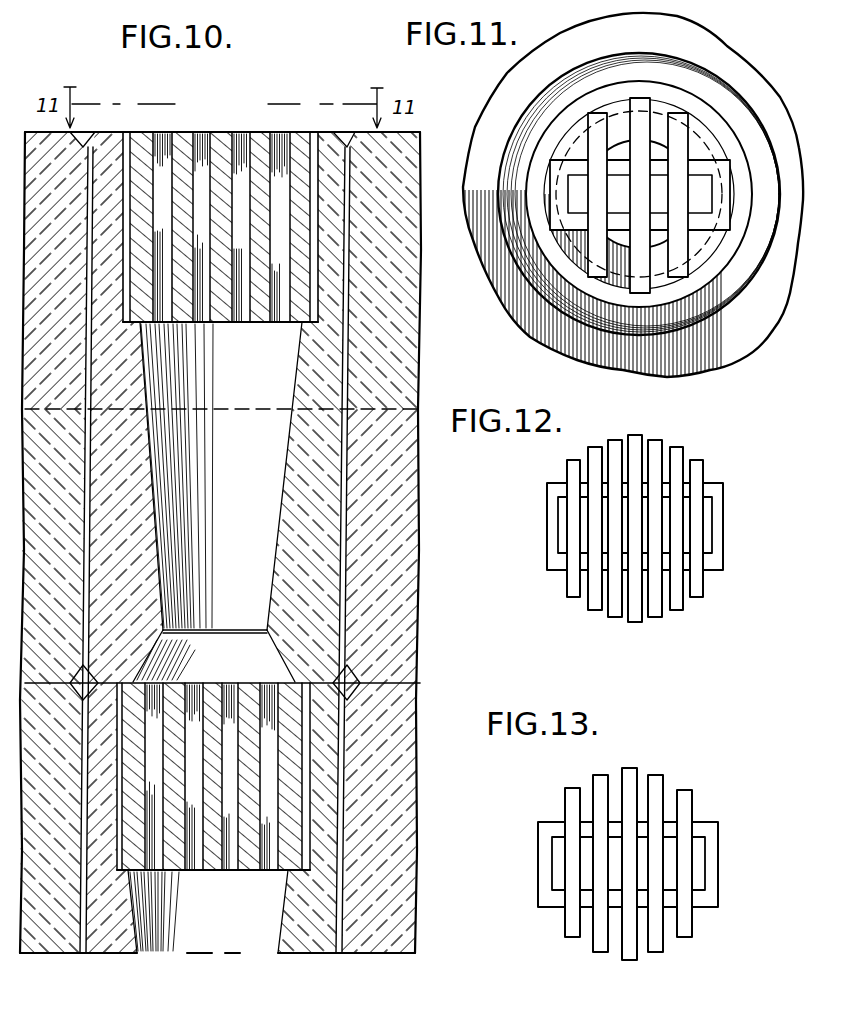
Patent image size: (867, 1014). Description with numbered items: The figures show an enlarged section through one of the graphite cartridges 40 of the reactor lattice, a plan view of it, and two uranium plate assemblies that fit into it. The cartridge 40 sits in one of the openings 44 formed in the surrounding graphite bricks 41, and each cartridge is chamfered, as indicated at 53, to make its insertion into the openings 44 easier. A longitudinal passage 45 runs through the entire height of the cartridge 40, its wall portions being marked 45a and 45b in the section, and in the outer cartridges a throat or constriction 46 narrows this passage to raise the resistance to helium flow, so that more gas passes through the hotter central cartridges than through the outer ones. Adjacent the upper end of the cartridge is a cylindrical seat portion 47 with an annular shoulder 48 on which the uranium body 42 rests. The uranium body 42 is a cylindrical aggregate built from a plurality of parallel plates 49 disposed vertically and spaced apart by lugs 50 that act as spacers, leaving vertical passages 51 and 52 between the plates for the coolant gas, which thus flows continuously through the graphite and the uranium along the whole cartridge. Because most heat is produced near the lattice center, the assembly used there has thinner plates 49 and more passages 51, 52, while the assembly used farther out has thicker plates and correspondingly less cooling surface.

In FIG. 10, the graphite cartridge 40 is at (330, 142).
In FIG. 11, the graphite cartridge 40 is at (575, 112).
In FIG. 10, the graphite bricks 41 is at (395, 363).
In FIG. 11, the graphite bricks 41 is at (710, 363).
In FIG. 10, the uranium body 42 is at (261, 137).
In FIG. 11, the uranium body 42 is at (672, 112).
In FIG. 12, the uranium body 42 is at (601, 621).
In FIG. 13, the uranium body 42 is at (581, 951).
In FIG. 10, the openings in the bricks 44 is at (350, 515).
In FIG. 11, the openings in the bricks 44 is at (747, 117).
In FIG. 10, the longitudinal passage 45 is at (300, 637).
In FIG. 10, the conical cavity bottom surface 45a is at (262, 650).
In FIG. 10, the cavity side wall surface 45b is at (265, 492).
In FIG. 10, the throat or constriction 46 is at (293, 613).
In FIG. 10, the cylindrical seat portion 47 is at (315, 285).
In FIG. 10, the annular shoulder 48 is at (313, 310).
In FIG. 11, the annular shoulder 48 is at (708, 253).
In FIG. 10, the parallel plates 49 is at (230, 126).
In FIG. 11, the parallel plates 49 is at (693, 117).
In FIG. 12, the parallel plates 49 is at (663, 440).
In FIG. 13, the parallel plates 49 is at (660, 788).
In FIG. 11, the lugs 50 is at (697, 227).
In FIG. 13, the lugs 50 is at (692, 830).
In FIG. 11, the vertical passages 51 is at (573, 192).
In FIG. 12, the vertical passages 51 is at (707, 520).
In FIG. 13, the vertical passages 51 is at (695, 863).
In FIG. 10, the vertical passages 52 is at (285, 138).
In FIG. 11, the vertical passages 52 is at (618, 263).
In FIG. 12, the vertical passages 52 is at (663, 610).
In FIG. 13, the vertical passages 52 is at (668, 937).
In FIG. 10, the chamfer 53 is at (347, 677).